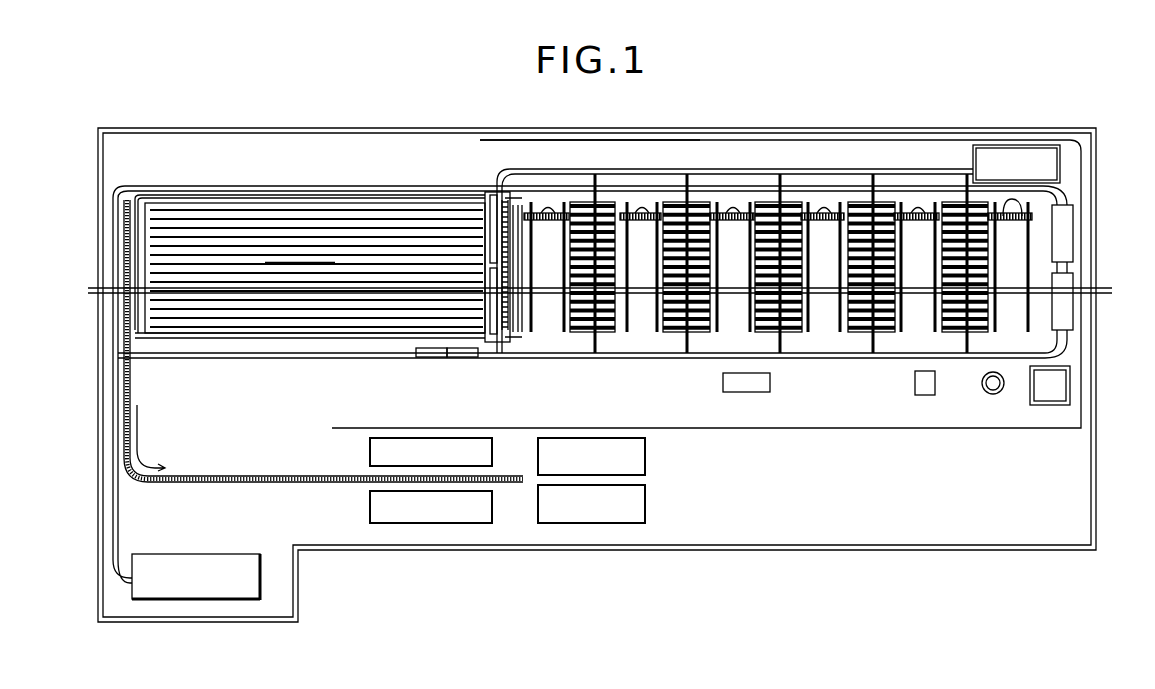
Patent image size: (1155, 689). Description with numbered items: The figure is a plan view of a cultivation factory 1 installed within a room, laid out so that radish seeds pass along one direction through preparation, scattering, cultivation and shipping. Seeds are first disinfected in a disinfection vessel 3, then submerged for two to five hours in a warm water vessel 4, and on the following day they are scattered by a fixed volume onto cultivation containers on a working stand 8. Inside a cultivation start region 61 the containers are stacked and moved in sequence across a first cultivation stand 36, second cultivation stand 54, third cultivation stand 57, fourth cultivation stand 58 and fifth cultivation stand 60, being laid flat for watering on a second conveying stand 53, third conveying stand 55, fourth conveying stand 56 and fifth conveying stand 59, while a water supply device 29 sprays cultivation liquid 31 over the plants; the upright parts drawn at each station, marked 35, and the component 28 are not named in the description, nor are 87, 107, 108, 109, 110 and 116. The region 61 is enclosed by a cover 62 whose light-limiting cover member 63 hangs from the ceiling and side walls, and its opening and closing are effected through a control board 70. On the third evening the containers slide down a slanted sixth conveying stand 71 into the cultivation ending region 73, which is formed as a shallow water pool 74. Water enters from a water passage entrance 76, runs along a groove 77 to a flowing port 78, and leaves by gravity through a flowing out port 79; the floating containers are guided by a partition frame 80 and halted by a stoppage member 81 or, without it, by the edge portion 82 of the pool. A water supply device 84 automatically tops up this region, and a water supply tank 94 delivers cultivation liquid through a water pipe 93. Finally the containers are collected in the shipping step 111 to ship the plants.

The cultivation factory 1 is at (288, 142).
The disinfection vessel 3 is at (1034, 386).
The warm water vessel 4 is at (982, 384).
The working stand 8 is at (1066, 240).
The processing station 28 is at (1020, 252).
The water supply device 29 is at (915, 392).
The cultivation liquid 31 is at (995, 148).
The guide post 35 is at (779, 267).
The first cultivation stand 36 is at (997, 343).
The second conveying stand 53 is at (926, 252).
The second cultivation stand 54 is at (902, 341).
The third conveying stand 55 is at (833, 252).
The fourth conveying stand 56 is at (741, 252).
The third cultivation stand 57 is at (809, 341).
The fourth cultivation stand 58 is at (717, 341).
The fifth conveying stand 59 is at (650, 252).
The fifth cultivation stand 60 is at (625, 341).
The cultivation start region 61 is at (853, 348).
The cover 62 is at (747, 139).
The cover member 63 is at (662, 117).
The control board 70 is at (470, 358).
The sixth conveying stand 71 is at (558, 252).
The cultivation ending region 73 is at (288, 348).
The water pool 74 is at (322, 333).
The water passage entrance 76 is at (1100, 292).
The groove 77 is at (1010, 279).
The flowing port 78 is at (515, 285).
The flowing out port 79 is at (138, 292).
The partition frame 80 is at (222, 335).
The stoppage member 81 is at (152, 338).
The edge portion 82 is at (140, 332).
The water supply device 84 is at (498, 343).
The supply pipe 87 is at (372, 188).
The water pipe 93 is at (603, 174).
The water supply tank 94 is at (1033, 145).
The pipe line 107 is at (688, 196).
The reservoir 108 is at (200, 575).
The small box 109 is at (425, 358).
The flexible hose 110 is at (130, 426).
The shipping step 111 is at (370, 452).
The terminal block 116 is at (724, 386).